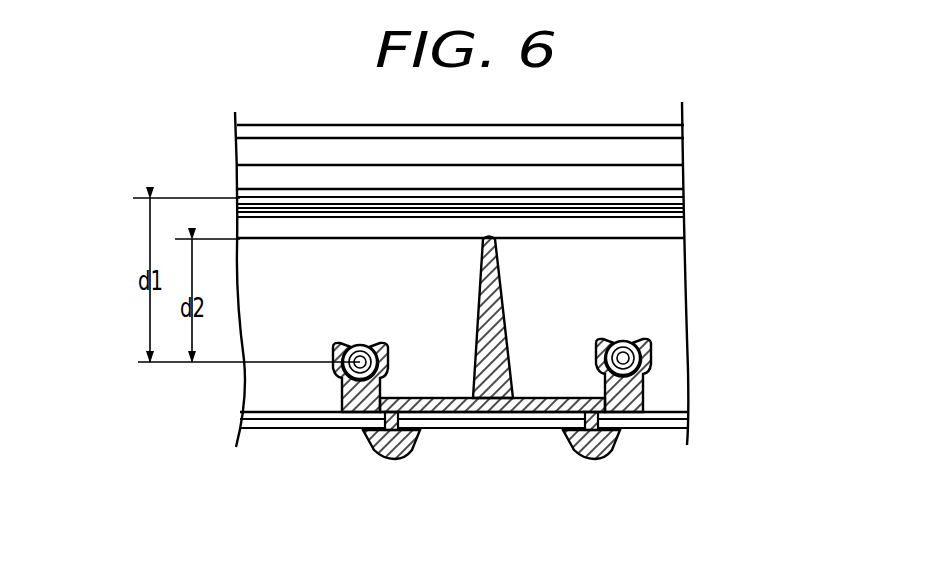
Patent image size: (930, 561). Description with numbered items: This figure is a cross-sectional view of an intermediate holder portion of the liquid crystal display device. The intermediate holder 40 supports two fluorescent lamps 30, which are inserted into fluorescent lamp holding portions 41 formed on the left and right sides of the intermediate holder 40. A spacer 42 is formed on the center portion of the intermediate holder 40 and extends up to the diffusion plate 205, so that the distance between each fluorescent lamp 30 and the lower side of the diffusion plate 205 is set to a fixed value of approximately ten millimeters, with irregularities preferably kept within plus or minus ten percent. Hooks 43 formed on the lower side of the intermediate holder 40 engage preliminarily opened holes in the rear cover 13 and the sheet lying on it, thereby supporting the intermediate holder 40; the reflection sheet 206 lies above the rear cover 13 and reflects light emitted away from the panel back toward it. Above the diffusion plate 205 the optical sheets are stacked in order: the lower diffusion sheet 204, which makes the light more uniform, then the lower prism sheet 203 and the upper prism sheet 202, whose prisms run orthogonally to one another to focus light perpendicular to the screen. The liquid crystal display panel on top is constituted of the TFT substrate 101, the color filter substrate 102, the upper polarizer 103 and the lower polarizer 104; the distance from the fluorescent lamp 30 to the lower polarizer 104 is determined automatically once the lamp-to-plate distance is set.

The rear cover 13 is at (697, 425).
The fluorescent lamp 30 is at (620, 341).
The intermediate holder 40 is at (470, 396).
The fluorescent lamp holding portion 41 is at (604, 358).
The spacer 42 is at (498, 272).
The hook 43 is at (592, 458).
The TFT substrate 101 is at (677, 173).
The color filter substrate 102 is at (675, 147).
The upper polarizer 103 is at (678, 127).
The lower polarizer 104 is at (680, 193).
The upper prism sheet 202 is at (683, 202).
The lower prism sheet 203 is at (683, 207).
The lower diffusion sheet 204 is at (683, 213).
The diffusion plate 205 is at (683, 227).
The reflection sheet 206 is at (697, 411).